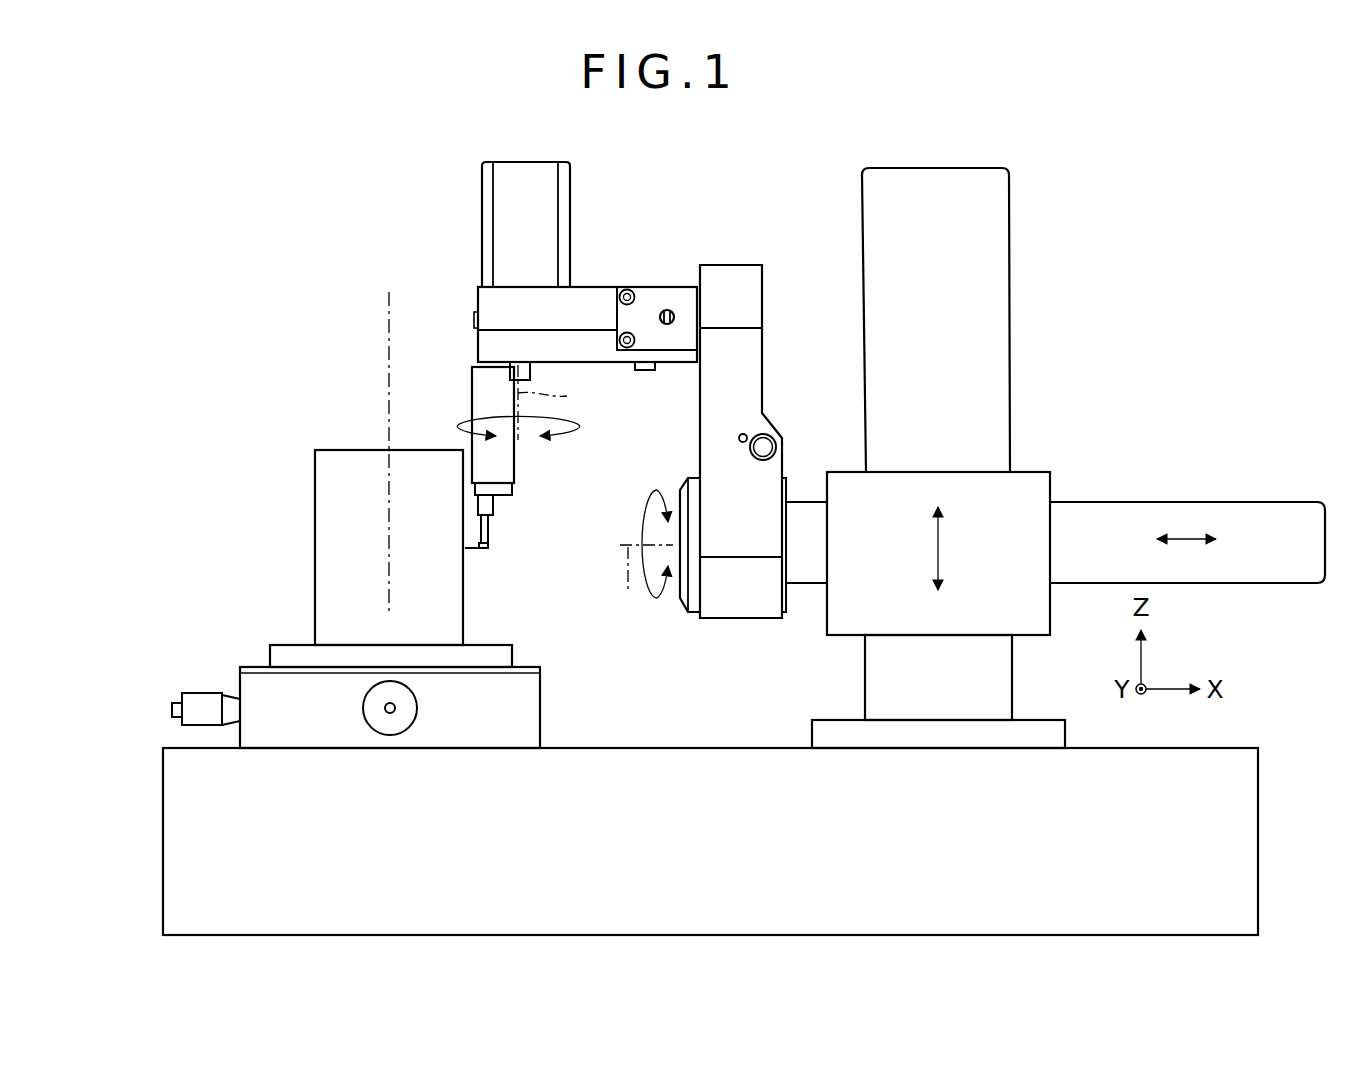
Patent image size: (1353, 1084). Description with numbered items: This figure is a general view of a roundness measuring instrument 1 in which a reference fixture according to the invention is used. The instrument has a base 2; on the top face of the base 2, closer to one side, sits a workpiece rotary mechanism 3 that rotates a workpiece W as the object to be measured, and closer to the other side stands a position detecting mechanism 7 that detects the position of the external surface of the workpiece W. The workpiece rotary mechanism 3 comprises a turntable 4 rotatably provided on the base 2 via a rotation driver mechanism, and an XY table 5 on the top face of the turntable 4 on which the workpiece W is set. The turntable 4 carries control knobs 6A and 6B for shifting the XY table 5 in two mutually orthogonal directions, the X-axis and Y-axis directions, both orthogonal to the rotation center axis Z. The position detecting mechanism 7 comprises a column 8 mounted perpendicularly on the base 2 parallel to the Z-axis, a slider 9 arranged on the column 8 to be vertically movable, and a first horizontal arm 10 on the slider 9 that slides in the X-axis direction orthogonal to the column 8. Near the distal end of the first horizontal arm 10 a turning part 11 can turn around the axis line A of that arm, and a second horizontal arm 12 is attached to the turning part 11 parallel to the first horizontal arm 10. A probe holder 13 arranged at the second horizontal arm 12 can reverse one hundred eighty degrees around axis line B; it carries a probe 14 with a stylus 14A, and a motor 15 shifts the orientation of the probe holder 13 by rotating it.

The roundness measuring instrument 1 is at (1138, 246).
The base 2 is at (1237, 821).
The workpiece rotary mechanism 3 is at (159, 573).
The turntable 4 is at (246, 687).
The XY table 5 is at (276, 656).
The control knob 6A is at (180, 718).
The control knob 6B is at (385, 725).
The position detecting mechanism 7 is at (1032, 389).
The column 8 is at (1000, 303).
The slider 9 is at (1032, 481).
The first horizontal arm 10 is at (1262, 503).
The turning part 11 is at (710, 457).
The second horizontal arm 12 is at (598, 294).
The probe holder 13 is at (480, 395).
The probe 14 is at (492, 538).
The stylus 14A is at (467, 551).
The motor 15 is at (527, 176).
The workpiece W is at (337, 460).